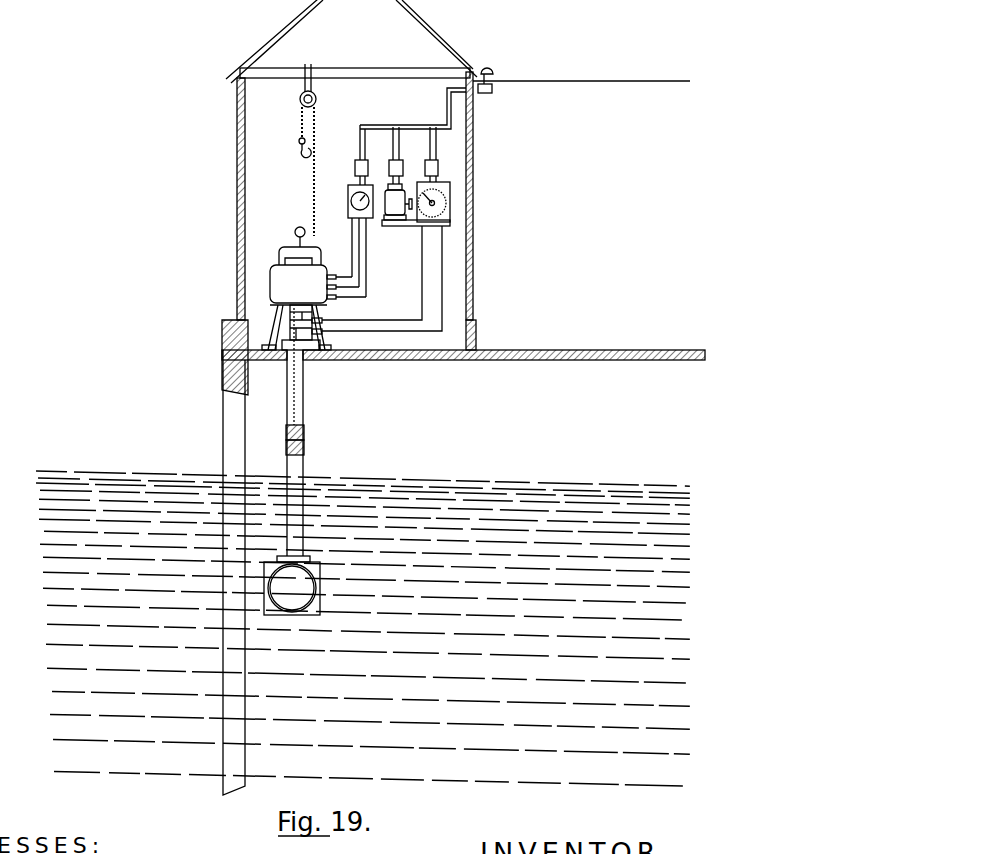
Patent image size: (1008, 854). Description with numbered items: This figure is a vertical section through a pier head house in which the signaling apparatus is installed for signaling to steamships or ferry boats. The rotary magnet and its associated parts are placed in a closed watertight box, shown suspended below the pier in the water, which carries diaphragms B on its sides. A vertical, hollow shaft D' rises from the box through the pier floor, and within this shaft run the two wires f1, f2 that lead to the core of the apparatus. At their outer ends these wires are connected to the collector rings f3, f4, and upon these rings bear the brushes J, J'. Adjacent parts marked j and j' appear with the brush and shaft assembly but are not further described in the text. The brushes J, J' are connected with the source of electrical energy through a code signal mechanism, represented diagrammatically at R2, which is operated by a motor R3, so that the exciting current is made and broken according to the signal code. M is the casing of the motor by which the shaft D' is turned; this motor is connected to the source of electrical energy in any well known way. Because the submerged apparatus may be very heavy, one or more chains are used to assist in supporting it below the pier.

The motor R3 is at (440, 166).
The code signal mechanism R2 is at (445, 206).
The casing of the motor M is at (318, 265).
The brush J is at (324, 313).
The pump column j is at (341, 326).
The conductor wires j' is at (382, 289).
The brush J' is at (463, 370).
The collector ring f3 is at (292, 334).
The collector ring f4 is at (290, 322).
The wire f2 is at (305, 432).
The wire f1 is at (292, 440).
The shaft D' is at (319, 453).
The diaphragm B is at (292, 585).